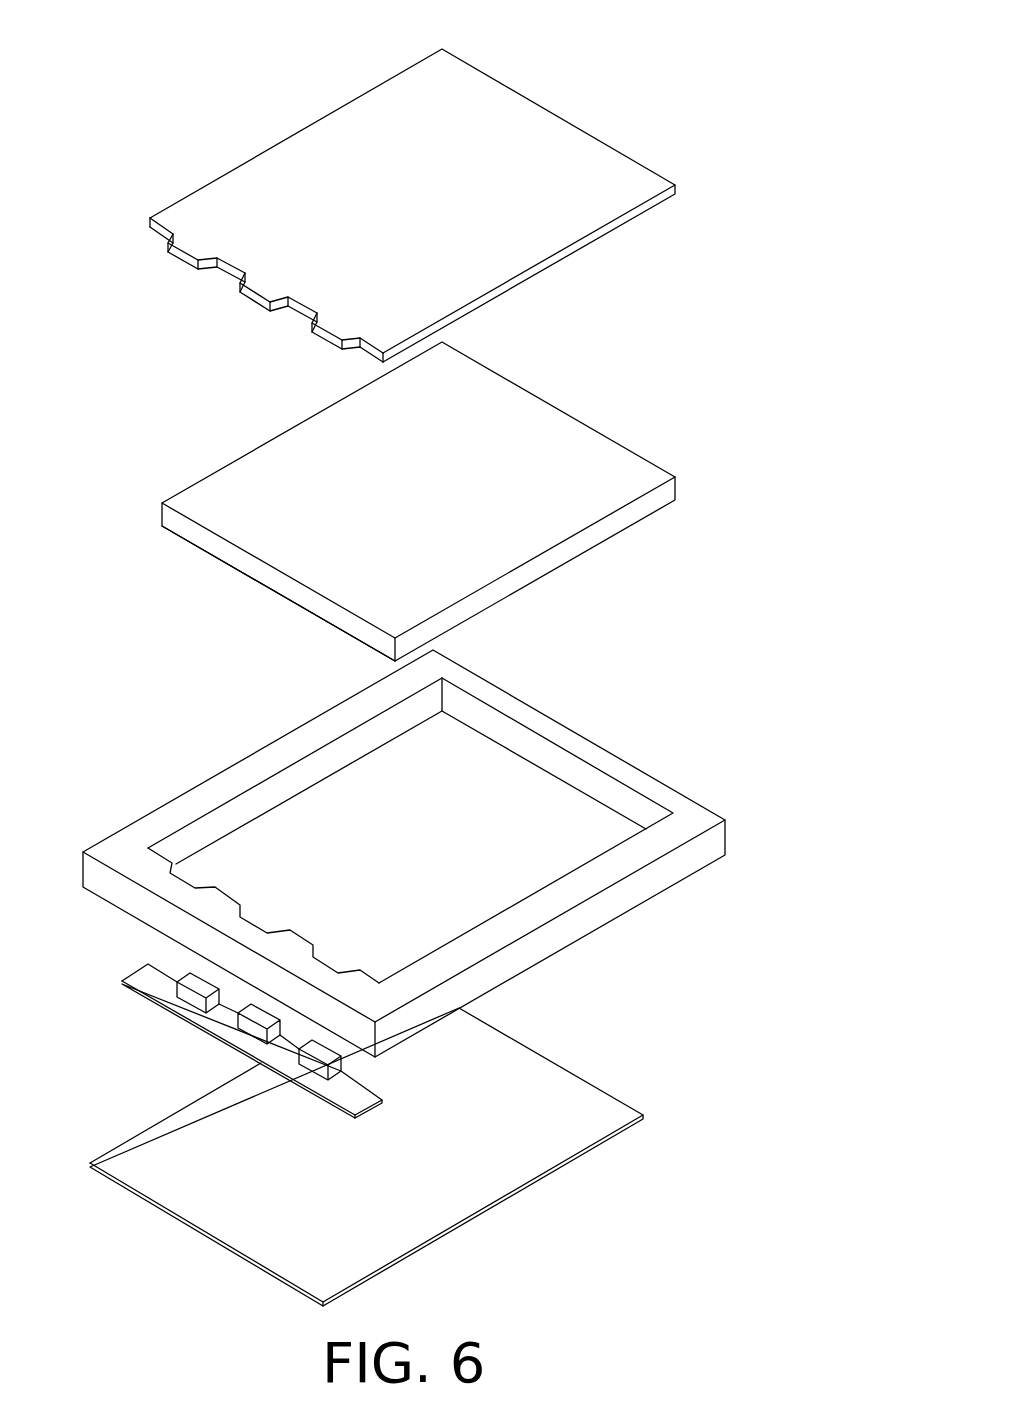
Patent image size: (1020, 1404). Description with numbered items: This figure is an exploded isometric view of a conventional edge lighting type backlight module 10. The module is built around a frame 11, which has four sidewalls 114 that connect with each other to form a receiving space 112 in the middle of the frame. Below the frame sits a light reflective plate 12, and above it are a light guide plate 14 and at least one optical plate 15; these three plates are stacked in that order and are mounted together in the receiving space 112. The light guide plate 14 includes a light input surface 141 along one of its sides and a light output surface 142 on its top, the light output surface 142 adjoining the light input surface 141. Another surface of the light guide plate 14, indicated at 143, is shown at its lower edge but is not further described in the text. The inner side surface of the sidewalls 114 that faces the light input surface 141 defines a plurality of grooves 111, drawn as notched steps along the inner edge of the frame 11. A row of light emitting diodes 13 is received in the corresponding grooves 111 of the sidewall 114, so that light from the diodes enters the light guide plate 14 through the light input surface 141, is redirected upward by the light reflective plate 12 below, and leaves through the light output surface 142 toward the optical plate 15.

The backlight module 10 is at (411, 32).
The frame 11 is at (449, 853).
The grooves 111 is at (187, 880).
The receiving space 112 is at (545, 815).
The sidewalls 114 is at (477, 693).
The light reflective plate 12 is at (553, 1108).
The light emitting diodes 13 is at (192, 997).
The light guide plate 14 is at (385, 501).
The light input surface 141 is at (185, 528).
The light output surface 142 is at (242, 488).
The bottom surface of light guide plate 143 is at (258, 583).
The optical plate 15 is at (555, 153).